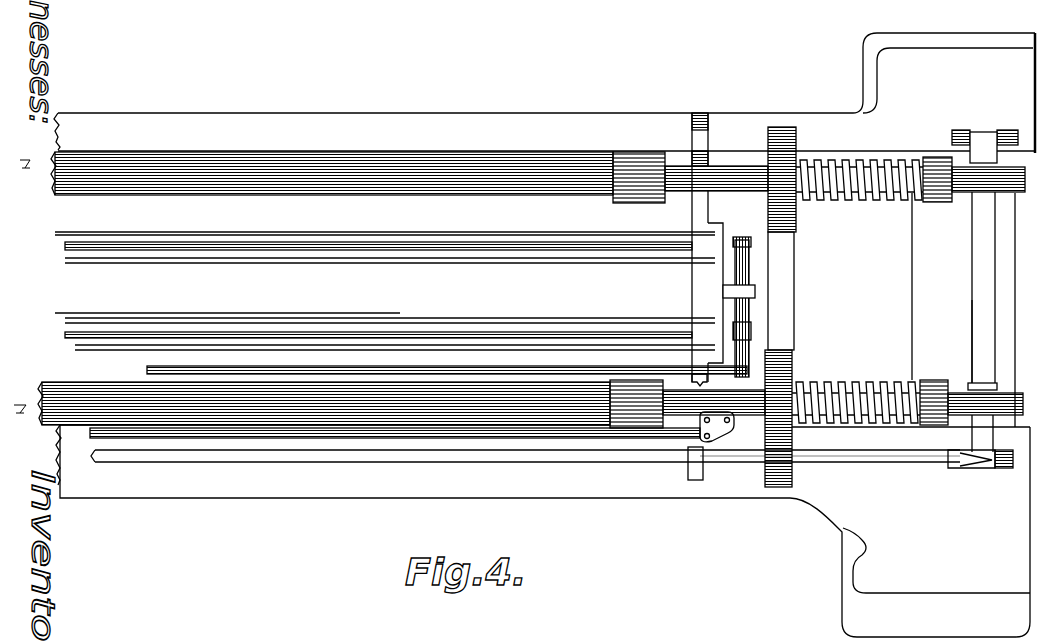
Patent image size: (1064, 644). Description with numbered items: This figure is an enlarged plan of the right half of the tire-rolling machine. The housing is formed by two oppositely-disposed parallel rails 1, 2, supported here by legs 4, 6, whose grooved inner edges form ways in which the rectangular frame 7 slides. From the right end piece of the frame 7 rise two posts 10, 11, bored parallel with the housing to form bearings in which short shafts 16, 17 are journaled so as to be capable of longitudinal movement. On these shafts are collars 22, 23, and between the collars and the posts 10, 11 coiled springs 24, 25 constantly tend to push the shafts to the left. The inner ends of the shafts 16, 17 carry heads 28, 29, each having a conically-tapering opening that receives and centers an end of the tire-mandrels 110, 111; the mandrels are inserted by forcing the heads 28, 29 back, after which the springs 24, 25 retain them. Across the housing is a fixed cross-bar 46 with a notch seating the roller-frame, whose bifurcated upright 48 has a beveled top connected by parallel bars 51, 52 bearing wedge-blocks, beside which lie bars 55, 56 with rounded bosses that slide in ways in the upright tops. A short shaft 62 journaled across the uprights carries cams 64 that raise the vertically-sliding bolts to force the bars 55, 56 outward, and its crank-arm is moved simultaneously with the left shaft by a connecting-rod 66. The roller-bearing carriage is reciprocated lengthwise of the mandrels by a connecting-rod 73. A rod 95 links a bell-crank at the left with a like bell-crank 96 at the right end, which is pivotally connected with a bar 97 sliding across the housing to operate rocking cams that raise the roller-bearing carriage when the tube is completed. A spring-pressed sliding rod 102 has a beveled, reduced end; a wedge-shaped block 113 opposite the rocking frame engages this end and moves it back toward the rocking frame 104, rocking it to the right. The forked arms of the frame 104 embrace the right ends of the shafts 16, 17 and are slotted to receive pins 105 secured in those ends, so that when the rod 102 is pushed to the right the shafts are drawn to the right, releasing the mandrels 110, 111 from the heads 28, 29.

The rail 1 is at (594, 498).
The rail 2 is at (524, 114).
The leg 4 is at (936, 572).
The leg 6 is at (960, 34).
The rectangular frame 7 is at (911, 268).
The post 10 is at (935, 157).
The post 11 is at (934, 425).
The shaft 16 is at (1031, 185).
The shaft 17 is at (1024, 407).
The collar 22 is at (797, 208).
The collar 23 is at (798, 378).
The coiled spring 24 is at (853, 200).
The coiled spring 25 is at (856, 381).
The head 28 is at (636, 204).
The head 29 is at (628, 380).
The fixed cross-bar 46 is at (691, 212).
The bifurcated upright 48 is at (691, 291).
The parallel bar 51 is at (400, 264).
The parallel bar 52 is at (412, 241).
The bar 55 is at (227, 289).
The bar 56 is at (380, 231).
The connecting-rod 66 is at (421, 357).
The short shaft 62 is at (745, 307).
The cam 64 is at (750, 321).
The connecting-rod 73 is at (793, 290).
The rod 95 is at (396, 449).
The bell-crank 96 is at (717, 428).
The bar 97 is at (730, 383).
The sliding rod 102 is at (840, 464).
The rocking frame 104 is at (984, 341).
The pin 105 is at (983, 200).
The mandrel 110 is at (332, 183).
The mandrel 111 is at (324, 395).
The wedge-shaped block 113 is at (990, 469).